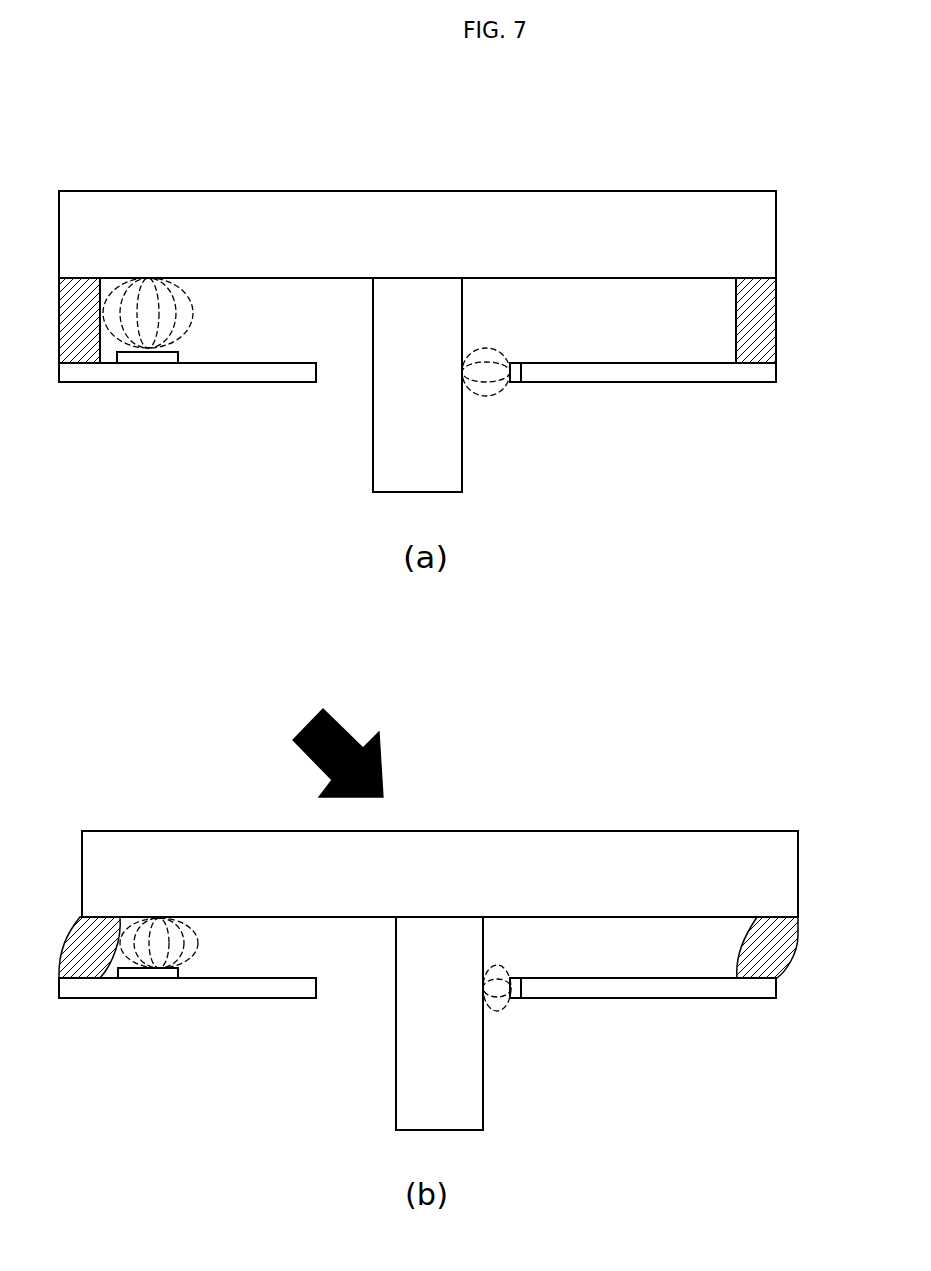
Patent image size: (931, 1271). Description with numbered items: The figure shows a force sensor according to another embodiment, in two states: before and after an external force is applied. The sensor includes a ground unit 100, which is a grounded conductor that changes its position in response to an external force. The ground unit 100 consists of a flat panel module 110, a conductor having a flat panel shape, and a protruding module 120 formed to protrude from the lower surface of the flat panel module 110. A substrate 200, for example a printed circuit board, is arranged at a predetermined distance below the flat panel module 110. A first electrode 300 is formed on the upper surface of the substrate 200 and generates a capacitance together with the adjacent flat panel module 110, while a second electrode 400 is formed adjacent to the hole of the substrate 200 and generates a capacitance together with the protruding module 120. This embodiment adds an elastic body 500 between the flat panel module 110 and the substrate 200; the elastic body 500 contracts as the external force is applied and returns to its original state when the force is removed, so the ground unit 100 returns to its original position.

The ground unit 100 is at (418, 108).
The flat panel module 110 is at (419, 233).
The protruding module 120 is at (393, 362).
The substrate 200 is at (640, 373).
The first electrode 300 is at (140, 357).
The second electrode 400 is at (517, 383).
The elastic body 500 is at (760, 313).